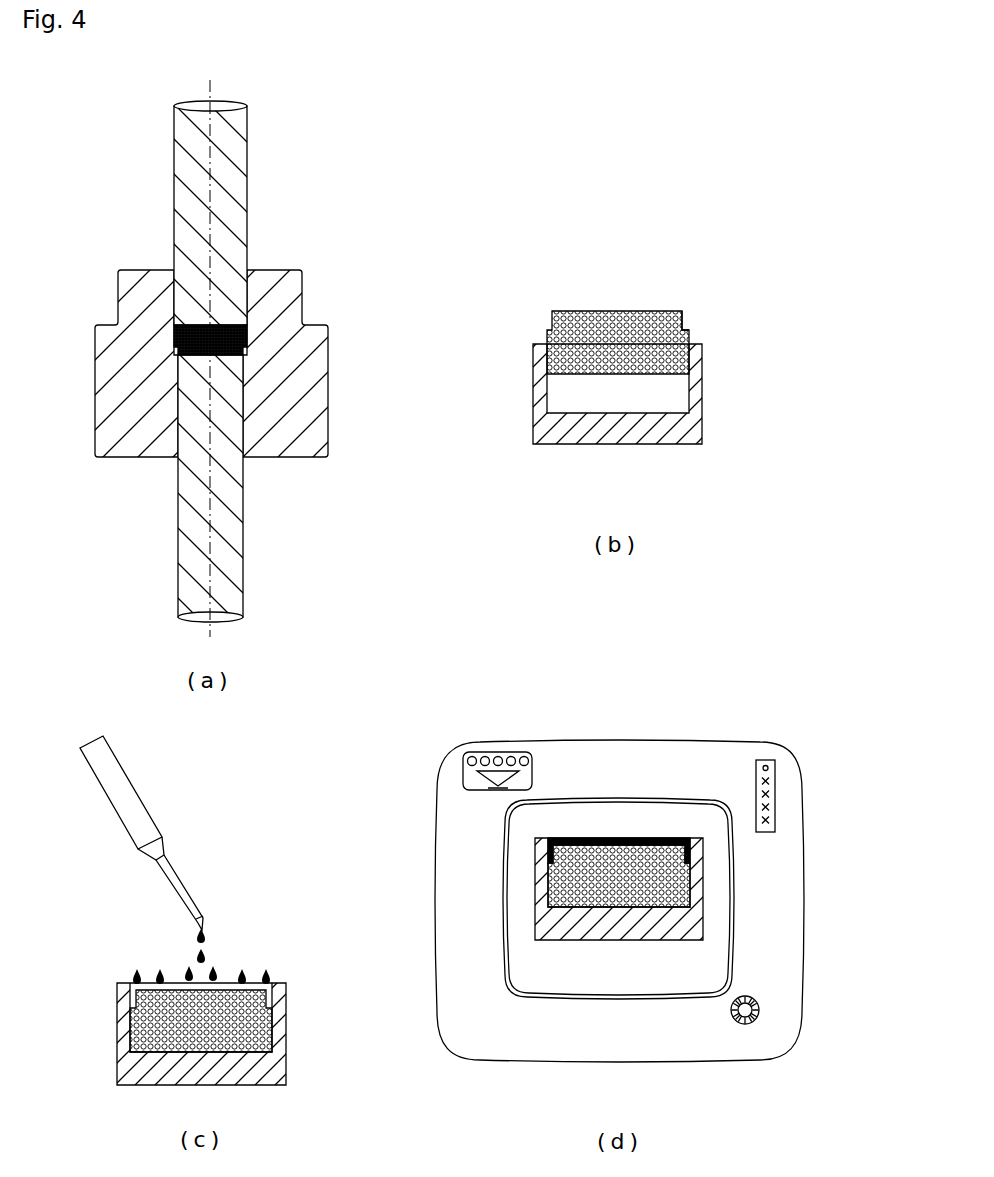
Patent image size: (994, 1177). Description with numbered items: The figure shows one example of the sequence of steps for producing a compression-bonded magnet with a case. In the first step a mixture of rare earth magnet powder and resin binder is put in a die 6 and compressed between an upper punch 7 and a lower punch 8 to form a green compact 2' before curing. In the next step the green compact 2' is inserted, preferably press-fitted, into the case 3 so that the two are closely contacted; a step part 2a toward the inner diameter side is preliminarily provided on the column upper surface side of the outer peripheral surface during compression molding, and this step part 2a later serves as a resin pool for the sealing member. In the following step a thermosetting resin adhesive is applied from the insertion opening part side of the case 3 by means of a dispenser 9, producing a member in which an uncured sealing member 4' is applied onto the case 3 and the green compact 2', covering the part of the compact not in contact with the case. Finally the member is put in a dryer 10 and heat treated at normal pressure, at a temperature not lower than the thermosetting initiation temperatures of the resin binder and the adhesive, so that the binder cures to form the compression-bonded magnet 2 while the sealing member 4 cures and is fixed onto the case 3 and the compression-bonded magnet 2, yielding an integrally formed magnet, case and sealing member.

The compression-bonded magnet 2 is at (697, 876).
The green compact 2' is at (380, 626).
The step part 2a is at (685, 330).
The case 3 is at (648, 434).
The sealing member 4 is at (631, 775).
The uncured sealing member 4' is at (205, 932).
The die 6 is at (130, 412).
The upper punch 7 is at (227, 156).
The lower punch 8 is at (232, 525).
The pipette 9 is at (132, 808).
The dryer 10 is at (590, 762).